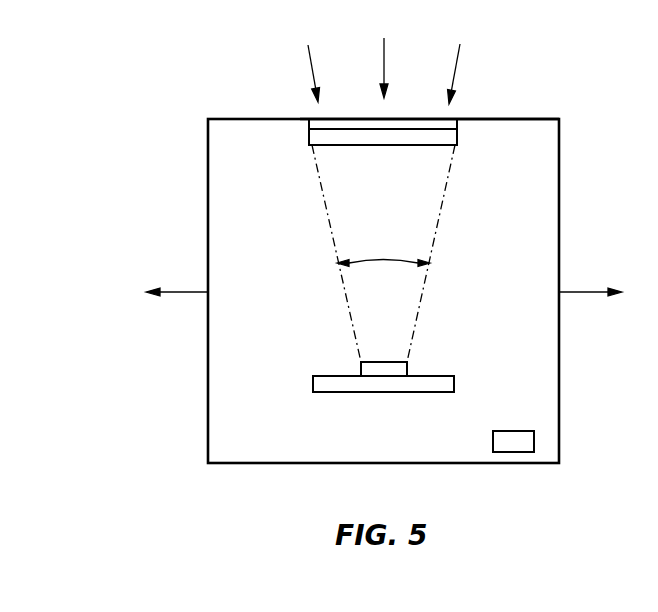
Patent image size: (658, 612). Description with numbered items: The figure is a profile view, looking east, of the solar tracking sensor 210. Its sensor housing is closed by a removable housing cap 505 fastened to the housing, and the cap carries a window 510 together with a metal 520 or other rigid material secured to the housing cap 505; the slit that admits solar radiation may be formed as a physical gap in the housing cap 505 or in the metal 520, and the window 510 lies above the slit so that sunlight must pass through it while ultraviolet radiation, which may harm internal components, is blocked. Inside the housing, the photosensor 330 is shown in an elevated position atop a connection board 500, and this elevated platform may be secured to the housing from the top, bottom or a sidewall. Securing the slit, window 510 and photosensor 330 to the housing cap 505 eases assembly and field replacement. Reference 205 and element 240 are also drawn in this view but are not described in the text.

The solar tracking sensor 210 is at (191, 72).
The housing 205 is at (208, 221).
The housing cap 505 is at (508, 118).
The window 510 is at (309, 124).
The metal 520 is at (309, 138).
The photosensor 330 is at (407, 372).
The connection board 500 is at (335, 392).
The controller 240 is at (522, 431).